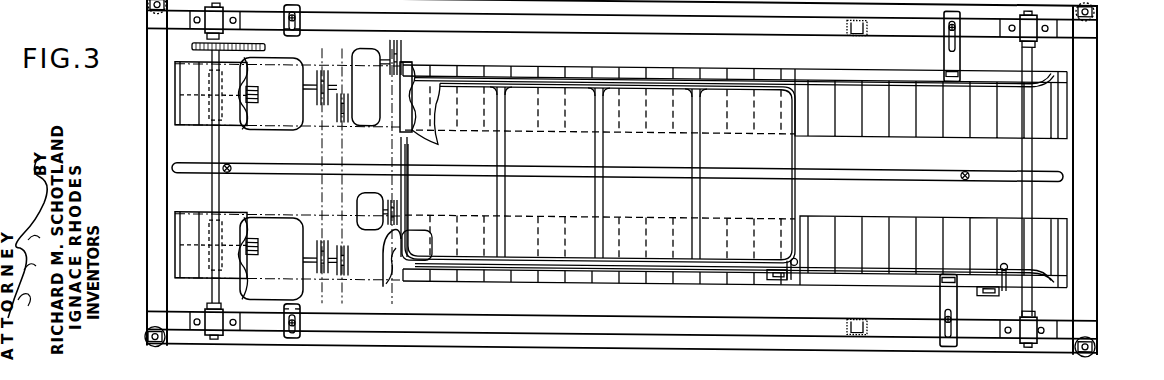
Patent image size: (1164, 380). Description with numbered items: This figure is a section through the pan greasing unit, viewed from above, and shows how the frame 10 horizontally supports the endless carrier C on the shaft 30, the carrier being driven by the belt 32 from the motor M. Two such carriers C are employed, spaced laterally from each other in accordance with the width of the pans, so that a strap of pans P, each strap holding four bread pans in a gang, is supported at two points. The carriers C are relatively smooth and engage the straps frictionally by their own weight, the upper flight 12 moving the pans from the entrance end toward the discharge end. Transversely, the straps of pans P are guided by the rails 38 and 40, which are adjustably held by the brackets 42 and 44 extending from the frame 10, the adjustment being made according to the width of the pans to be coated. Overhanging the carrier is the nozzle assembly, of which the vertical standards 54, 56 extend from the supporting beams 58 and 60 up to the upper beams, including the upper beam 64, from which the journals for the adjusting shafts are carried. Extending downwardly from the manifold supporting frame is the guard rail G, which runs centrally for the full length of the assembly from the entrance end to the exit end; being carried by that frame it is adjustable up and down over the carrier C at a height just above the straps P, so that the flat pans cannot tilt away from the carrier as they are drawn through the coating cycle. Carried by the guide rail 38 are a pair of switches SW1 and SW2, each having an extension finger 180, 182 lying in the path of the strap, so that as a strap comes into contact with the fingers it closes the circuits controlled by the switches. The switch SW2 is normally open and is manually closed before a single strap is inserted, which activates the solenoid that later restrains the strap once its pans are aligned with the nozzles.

The frame 10 is at (1105, 139).
The upper flight 12 is at (613, 61).
The shaft 30 is at (219, 143).
The belt 32 is at (228, 41).
The rail 38 is at (856, 70).
The rail 40 is at (866, 274).
The bracket 42 is at (300, 33).
The bracket 44 is at (300, 307).
The vertical standard 54 is at (863, 15).
The vertical standard 56 is at (862, 320).
The supporting beam 58 is at (511, 27).
The supporting beam 60 is at (482, 317).
The upper beam 64 is at (480, 335).
The extension finger 180 is at (797, 252).
The extension finger 182 is at (1006, 254).
The switch SW1 is at (783, 273).
The switch SW2 is at (990, 277).
The pan P is at (797, 149).
The guard rail G is at (190, 163).
The carrier C is at (180, 108).
The motor M is at (288, 276).